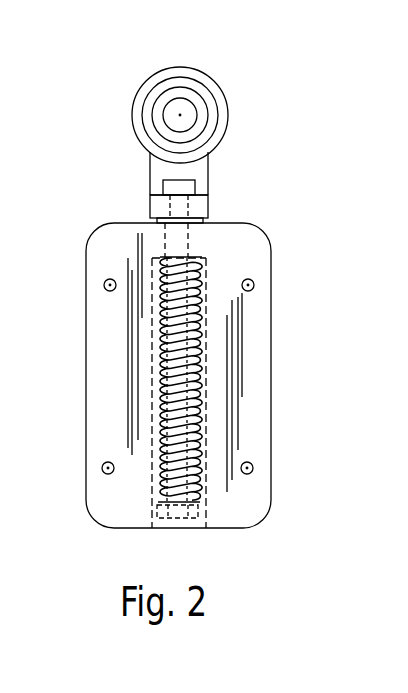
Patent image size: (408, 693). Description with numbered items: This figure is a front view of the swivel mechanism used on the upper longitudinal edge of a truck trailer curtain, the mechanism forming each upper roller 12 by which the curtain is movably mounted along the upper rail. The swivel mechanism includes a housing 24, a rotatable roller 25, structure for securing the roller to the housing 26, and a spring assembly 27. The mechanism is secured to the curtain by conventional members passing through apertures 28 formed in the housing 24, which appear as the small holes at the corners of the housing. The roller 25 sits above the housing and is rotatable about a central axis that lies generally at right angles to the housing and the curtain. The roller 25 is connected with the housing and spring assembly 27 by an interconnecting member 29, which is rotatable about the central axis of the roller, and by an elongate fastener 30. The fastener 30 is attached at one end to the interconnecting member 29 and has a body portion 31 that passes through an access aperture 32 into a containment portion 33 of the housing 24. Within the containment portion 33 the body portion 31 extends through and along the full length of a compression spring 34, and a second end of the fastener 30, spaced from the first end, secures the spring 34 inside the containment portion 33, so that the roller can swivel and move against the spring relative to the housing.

The upper roller 12 is at (145, 77).
The housing 24 is at (255, 261).
The rotatable roller 25 is at (213, 92).
The structure for securing the roller to the housing 26 is at (138, 167).
The spring assembly 27 is at (222, 303).
The apertures 28 is at (253, 467).
The interconnecting member 29 is at (198, 165).
The elongate fastener 30 is at (171, 195).
The body portion 31 is at (167, 257).
The access aperture 32 is at (213, 230).
The containment portion 33 is at (255, 229).
The compression spring 34 is at (255, 229).